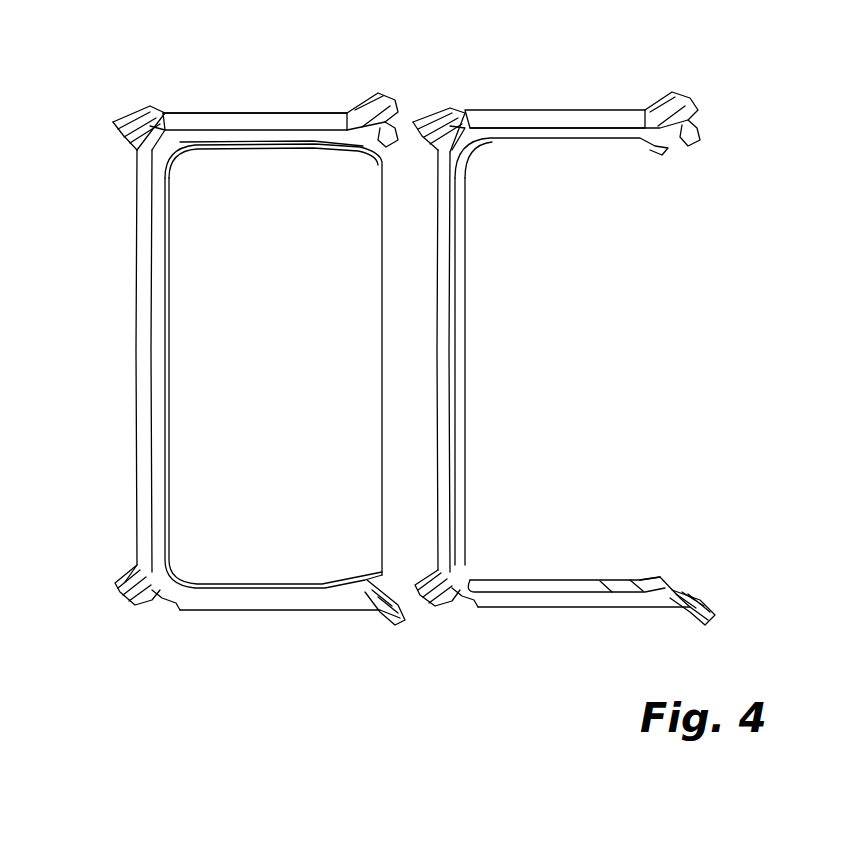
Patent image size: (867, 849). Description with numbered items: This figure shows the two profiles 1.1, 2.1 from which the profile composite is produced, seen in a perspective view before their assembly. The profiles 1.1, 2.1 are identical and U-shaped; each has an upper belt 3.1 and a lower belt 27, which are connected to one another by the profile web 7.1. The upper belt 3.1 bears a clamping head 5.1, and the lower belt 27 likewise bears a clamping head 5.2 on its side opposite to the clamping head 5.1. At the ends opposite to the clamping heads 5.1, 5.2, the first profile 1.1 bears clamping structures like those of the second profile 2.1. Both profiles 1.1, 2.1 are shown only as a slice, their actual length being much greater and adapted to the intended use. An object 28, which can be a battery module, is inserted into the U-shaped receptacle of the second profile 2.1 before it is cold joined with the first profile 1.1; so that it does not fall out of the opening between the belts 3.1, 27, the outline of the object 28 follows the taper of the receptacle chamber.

The first profile 1.1 is at (550, 106).
The second profile 2.1 is at (282, 112).
The upper belt 3.1 is at (592, 132).
The clamping head 5.1 is at (426, 118).
The clamping head 5.2 is at (446, 606).
The profile web 7.1 is at (468, 392).
The lower belt 27 is at (584, 590).
The object 28 is at (259, 359).